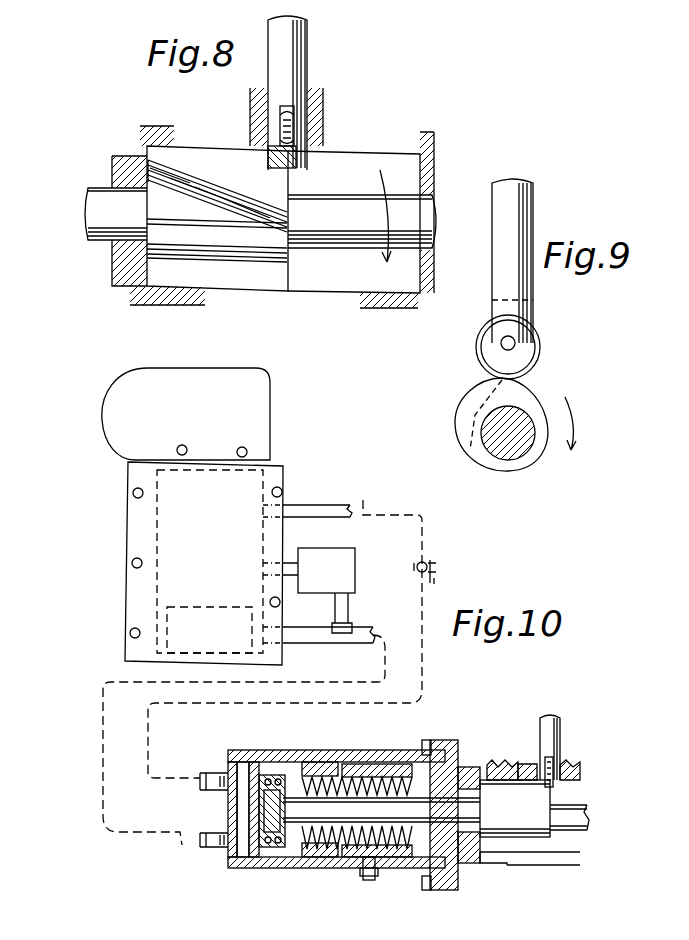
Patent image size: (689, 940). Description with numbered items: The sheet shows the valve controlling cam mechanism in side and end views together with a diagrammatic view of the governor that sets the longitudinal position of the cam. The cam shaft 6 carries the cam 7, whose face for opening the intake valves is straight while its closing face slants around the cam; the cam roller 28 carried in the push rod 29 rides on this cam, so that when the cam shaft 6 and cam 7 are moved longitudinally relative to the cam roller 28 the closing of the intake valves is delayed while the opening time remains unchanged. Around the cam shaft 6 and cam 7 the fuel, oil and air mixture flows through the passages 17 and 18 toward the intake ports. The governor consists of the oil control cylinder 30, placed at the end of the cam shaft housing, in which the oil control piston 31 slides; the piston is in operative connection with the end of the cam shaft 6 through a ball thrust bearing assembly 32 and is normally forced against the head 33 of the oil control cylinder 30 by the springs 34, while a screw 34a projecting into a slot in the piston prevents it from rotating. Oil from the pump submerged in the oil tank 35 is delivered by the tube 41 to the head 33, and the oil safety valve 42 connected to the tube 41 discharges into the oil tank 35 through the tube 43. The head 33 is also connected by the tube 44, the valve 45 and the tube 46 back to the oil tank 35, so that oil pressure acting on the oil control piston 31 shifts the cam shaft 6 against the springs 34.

In FIG. 8, the cam shaft 6 is at (98, 207).
In FIG. 9, the cam shaft 6 is at (503, 453).
In FIG. 10, the cam shaft 6 is at (580, 815).
In FIG. 8, the cam 7 is at (217, 211).
In FIG. 9, the cam 7 is at (468, 407).
In FIG. 10, the cam 7 is at (515, 808).
In FIG. 8, the passage 17 is at (205, 143).
In FIG. 10, the passage 17 is at (505, 772).
In FIG. 8, the passage 18 is at (365, 148).
In FIG. 10, the passage 18 is at (573, 770).
In FIG. 8, the cam roller 28 is at (290, 127).
In FIG. 9, the cam roller 28 is at (542, 347).
In FIG. 10, the cam roller 28 is at (553, 783).
In FIG. 8, the push rod 29 is at (307, 42).
In FIG. 9, the push rod 29 is at (533, 197).
In FIG. 10, the push rod 29 is at (560, 730).
In FIG. 10, the oil control cylinder 30 is at (331, 869).
In FIG. 10, the oil control piston 31 is at (247, 782).
In FIG. 10, the ball thrust bearing assembly 32 is at (270, 833).
In FIG. 10, the head 33 is at (228, 805).
In FIG. 10, the springs 34 is at (367, 763).
In FIG. 10, the screw 34a is at (372, 880).
In FIG. 10, the oil tank 35 is at (133, 533).
In FIG. 10, the tube 41 is at (307, 650).
In FIG. 10, the oil safety valve 42 is at (348, 557).
In FIG. 10, the tube 43 is at (293, 568).
In FIG. 10, the tube 44 is at (200, 788).
In FIG. 10, the valve 45 is at (436, 567).
In FIG. 10, the tube 46 is at (343, 507).